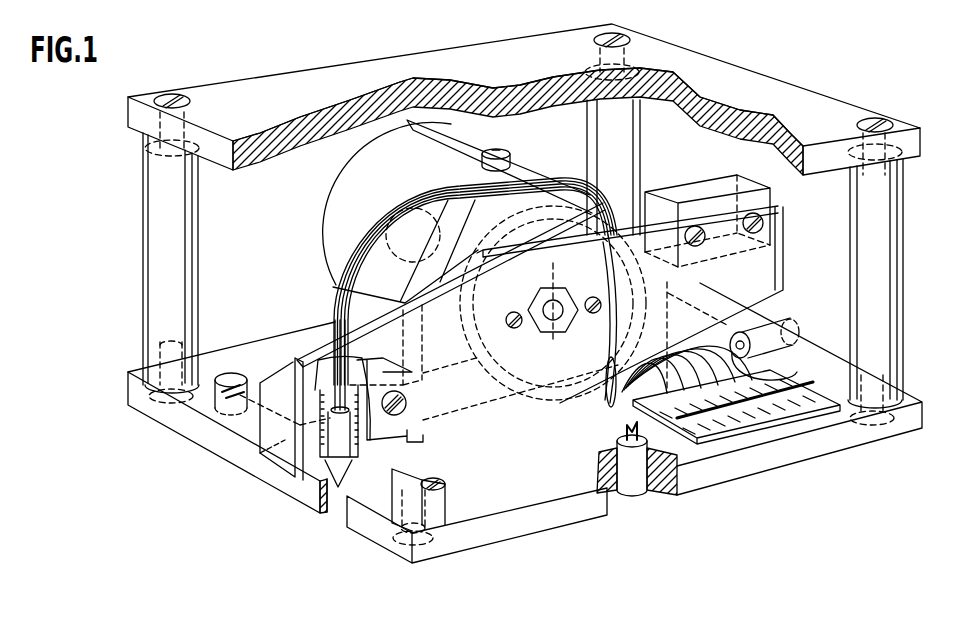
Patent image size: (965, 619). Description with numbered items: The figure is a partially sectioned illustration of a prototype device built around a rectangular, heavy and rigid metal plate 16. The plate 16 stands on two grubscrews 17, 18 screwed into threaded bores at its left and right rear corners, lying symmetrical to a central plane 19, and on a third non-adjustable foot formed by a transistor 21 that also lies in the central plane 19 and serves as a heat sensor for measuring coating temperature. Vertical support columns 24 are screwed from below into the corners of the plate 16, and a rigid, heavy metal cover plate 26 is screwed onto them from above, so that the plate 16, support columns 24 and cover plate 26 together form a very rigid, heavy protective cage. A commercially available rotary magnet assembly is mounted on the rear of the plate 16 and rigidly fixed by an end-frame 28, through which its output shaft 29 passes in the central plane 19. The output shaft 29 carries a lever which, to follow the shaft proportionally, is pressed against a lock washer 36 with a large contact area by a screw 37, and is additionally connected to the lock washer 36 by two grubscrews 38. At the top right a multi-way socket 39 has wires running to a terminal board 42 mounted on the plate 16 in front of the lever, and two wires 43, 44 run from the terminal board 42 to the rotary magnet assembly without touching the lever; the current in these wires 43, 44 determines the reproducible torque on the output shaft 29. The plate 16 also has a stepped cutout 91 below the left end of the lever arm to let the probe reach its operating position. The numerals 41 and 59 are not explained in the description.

The metal plate 16 is at (913, 432).
The grubscrew 17 is at (213, 399).
The grubscrew 18 is at (607, 323).
The central plane 19 is at (558, 352).
The transistor 21 is at (629, 478).
The support columns 24 is at (163, 333).
The cover plate 26 is at (683, 62).
The end-frame 28 is at (641, 191).
The output shaft 29 is at (553, 337).
The lock washer 36 is at (558, 233).
The screw 37 is at (538, 327).
The grubscrews 38 is at (553, 276).
The multi-way socket 39 is at (797, 333).
The circuit board 41 is at (827, 398).
The terminal board 42 is at (717, 433).
The wire 43 is at (503, 148).
The wire 44 is at (515, 148).
The sensor 59 is at (640, 281).
The stepped cutout 91 is at (288, 473).